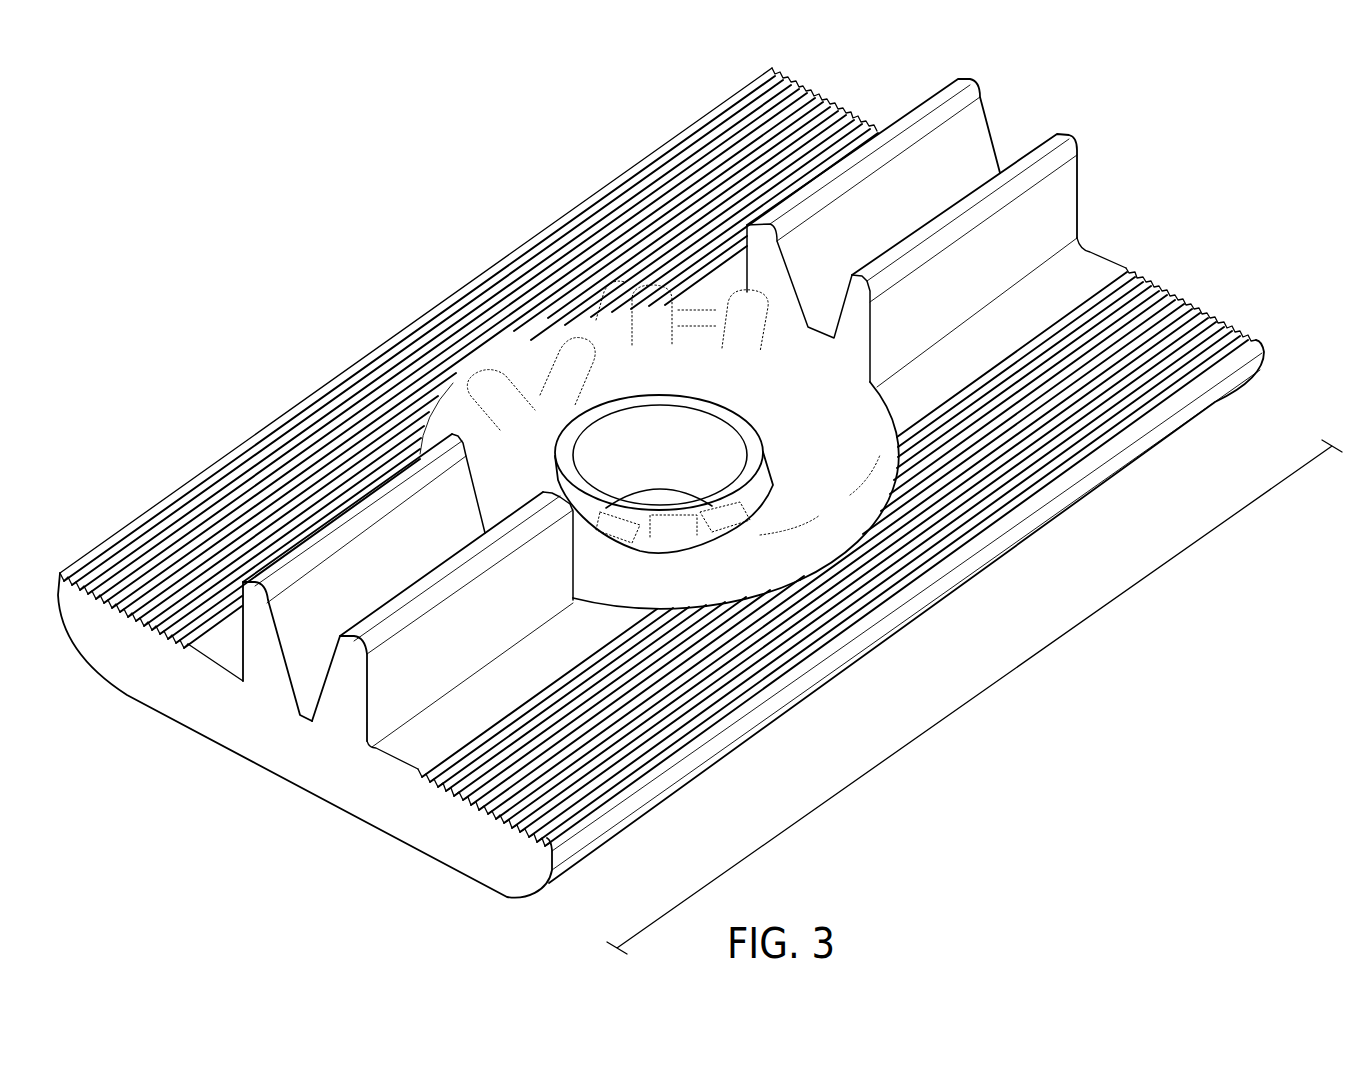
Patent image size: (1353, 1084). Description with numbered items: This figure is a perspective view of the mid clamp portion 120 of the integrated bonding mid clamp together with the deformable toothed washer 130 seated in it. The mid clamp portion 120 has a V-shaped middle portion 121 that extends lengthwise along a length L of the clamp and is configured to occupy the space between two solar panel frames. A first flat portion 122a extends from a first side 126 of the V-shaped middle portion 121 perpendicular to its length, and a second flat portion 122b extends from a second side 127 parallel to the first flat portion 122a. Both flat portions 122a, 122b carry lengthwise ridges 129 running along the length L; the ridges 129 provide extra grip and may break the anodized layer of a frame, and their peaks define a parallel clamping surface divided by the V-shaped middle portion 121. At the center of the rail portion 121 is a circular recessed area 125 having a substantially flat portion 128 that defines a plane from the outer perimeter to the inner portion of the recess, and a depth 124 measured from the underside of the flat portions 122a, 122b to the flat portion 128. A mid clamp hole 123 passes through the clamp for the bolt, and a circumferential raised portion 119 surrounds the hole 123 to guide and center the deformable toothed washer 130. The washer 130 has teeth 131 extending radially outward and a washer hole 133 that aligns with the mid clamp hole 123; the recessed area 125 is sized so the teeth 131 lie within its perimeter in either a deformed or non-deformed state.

The mid clamp portion 120 is at (612, 137).
The V-shaped middle portion 121 is at (975, 140).
The first flat portion 122a is at (290, 447).
The second flat portion 122b is at (765, 650).
The lengthwise ridges 129 is at (124, 573).
The first side 126 is at (237, 640).
The second side 127 is at (368, 697).
The recessed area 125 is at (868, 497).
The substantially flat portion 128 is at (703, 587).
The mid clamp hole 123 is at (723, 467).
The washer hole 133 is at (670, 390).
The circumferential raised portion 119 is at (603, 413).
The depth 124 is at (704, 314).
The deformable toothed washer 130 is at (567, 395).
The teeth 131 is at (502, 363).
The length L is at (974, 697).